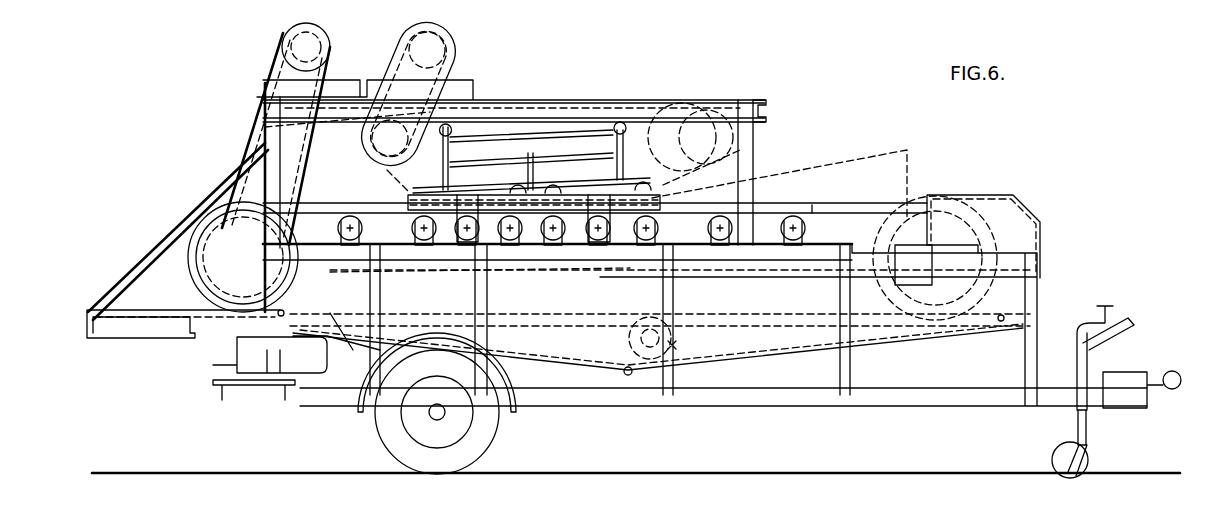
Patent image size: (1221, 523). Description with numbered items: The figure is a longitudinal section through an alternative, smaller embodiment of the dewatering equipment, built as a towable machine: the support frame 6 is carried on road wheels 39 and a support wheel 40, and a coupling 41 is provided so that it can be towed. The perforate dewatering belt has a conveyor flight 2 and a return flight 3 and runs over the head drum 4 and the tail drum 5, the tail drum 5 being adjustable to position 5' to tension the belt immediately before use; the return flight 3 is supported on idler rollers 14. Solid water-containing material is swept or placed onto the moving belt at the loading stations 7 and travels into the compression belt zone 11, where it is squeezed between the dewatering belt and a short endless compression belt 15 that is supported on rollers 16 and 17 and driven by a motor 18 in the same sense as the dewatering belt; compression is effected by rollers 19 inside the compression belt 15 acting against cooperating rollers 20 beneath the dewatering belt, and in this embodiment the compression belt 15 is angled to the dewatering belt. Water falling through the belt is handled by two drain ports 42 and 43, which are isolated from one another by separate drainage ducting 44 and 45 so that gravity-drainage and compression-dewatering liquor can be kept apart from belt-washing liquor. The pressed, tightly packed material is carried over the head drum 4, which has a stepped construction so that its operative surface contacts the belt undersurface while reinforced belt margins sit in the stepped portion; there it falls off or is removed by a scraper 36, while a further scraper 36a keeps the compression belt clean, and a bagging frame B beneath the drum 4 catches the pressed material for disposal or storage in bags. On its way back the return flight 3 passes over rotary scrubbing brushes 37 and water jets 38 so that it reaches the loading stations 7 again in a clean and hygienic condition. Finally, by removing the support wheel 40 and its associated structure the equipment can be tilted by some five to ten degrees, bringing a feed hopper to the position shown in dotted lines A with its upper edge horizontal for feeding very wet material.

The conveyor flight 2 is at (812, 205).
The return flight 3 is at (815, 320).
The head drum 4 is at (208, 278).
The tail drum 5 is at (935, 234).
The adjusted tail drum position 5' is at (992, 221).
The support frame 6 is at (240, 203).
The loading stations 7 is at (853, 84).
The compression belt zone 11 is at (740, 97).
The idler rollers 14 is at (672, 346).
The short endless belt 15 is at (665, 183).
The roller 16 is at (265, 124).
The roller 17 is at (705, 128).
The motor 18 is at (420, 45).
The compression rollers 19 is at (553, 192).
The cooperating rollers 20 is at (512, 226).
The scraper 36 is at (205, 290).
The scraper 36a is at (362, 152).
The rotary scrubbing brushes 37 is at (235, 343).
The water jets 38 is at (1004, 317).
The road wheels 39 is at (490, 420).
The support wheel 40 is at (1060, 455).
The coupling 41 is at (1170, 371).
The drain port 42 is at (628, 376).
The drain port 43 is at (580, 274).
The drainage ducting 44 is at (572, 365).
The drainage ducting 45 is at (525, 273).
The hopper position A is at (885, 150).
The bagging frame B is at (132, 263).